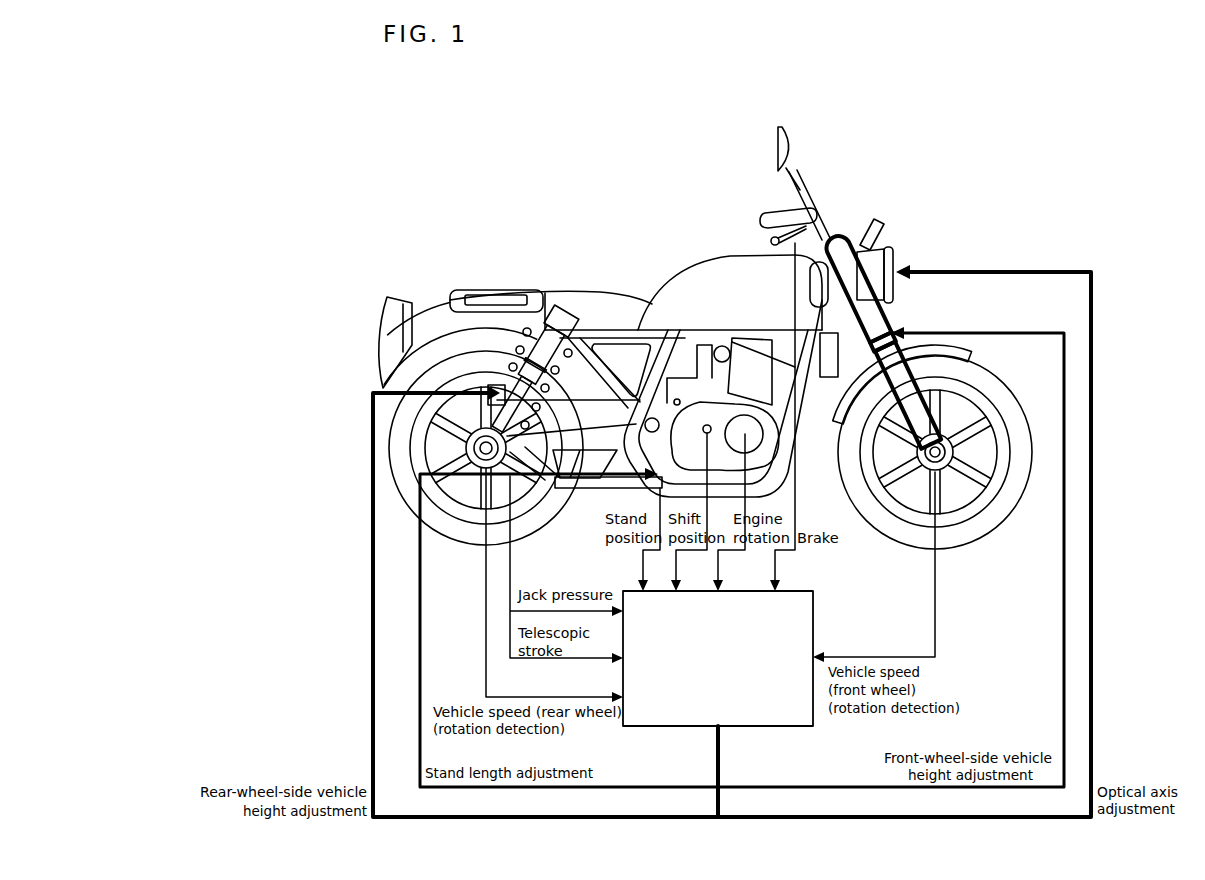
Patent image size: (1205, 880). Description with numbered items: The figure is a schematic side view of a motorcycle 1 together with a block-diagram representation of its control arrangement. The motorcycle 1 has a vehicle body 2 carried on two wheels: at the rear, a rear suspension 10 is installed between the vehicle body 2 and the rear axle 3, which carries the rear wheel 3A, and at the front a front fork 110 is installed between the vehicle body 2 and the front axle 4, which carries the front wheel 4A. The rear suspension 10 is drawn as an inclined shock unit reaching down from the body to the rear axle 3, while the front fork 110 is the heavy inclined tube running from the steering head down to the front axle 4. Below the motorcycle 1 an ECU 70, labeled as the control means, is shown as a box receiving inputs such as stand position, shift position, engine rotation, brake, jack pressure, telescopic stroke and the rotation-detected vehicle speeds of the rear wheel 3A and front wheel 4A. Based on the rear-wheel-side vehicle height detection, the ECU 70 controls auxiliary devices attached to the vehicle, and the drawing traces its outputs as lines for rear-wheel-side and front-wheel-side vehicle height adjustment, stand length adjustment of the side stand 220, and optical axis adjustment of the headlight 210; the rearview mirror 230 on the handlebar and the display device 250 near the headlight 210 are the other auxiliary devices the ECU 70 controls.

The motorcycle 1 is at (608, 393).
The vehicle body 2 is at (725, 256).
The rear axle 3 is at (468, 444).
The rear wheel 3A is at (456, 548).
The front axle 4 is at (958, 470).
The front wheel 4A is at (965, 549).
The rear suspension 10 is at (565, 312).
The ECU 70 is at (815, 622).
The front fork 110 is at (893, 327).
The headlight 210 is at (893, 255).
The side stand 220 is at (578, 490).
The rearview mirror 230 is at (794, 143).
The display device 250 is at (885, 228).